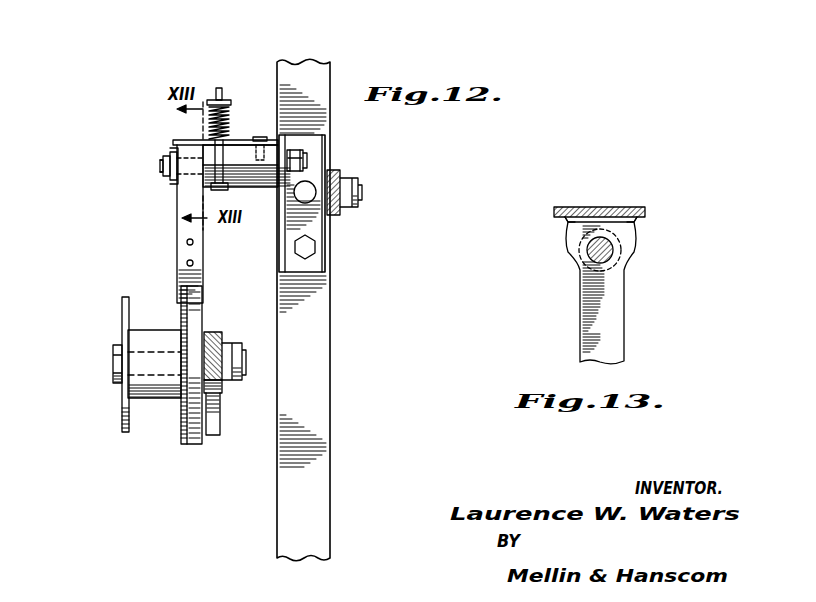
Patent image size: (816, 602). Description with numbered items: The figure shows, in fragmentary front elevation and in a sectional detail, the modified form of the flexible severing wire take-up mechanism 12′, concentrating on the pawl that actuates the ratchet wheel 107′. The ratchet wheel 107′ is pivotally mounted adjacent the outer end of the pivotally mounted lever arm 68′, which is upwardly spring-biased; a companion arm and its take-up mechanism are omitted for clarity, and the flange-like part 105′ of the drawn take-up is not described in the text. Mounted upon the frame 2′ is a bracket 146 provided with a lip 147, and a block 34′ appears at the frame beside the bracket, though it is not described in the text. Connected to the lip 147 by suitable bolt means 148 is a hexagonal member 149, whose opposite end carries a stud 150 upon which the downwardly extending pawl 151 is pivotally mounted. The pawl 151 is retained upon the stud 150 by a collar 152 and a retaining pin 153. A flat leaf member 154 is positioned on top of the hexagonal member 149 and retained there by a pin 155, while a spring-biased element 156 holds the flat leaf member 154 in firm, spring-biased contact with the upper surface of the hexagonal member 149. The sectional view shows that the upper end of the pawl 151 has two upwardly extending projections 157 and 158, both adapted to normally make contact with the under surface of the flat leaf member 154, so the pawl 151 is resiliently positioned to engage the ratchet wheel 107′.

In FIG. 12, the frame 2′ is at (310, 358).
In FIG. 12, the lip 147 is at (279, 242).
In FIG. 12, the bolt means 148 is at (305, 160).
In FIG. 12, the bracket 146 is at (318, 168).
In FIG. 12, the block 34′ is at (340, 213).
In FIG. 12, the hexagonal member 149 is at (258, 178).
In FIG. 12, the flat leaf member 154 is at (188, 140).
In FIG. 13, the flat leaf member 154 is at (612, 207).
In FIG. 12, the pawl 151 is at (177, 231).
In FIG. 13, the pawl 151 is at (622, 308).
In FIG. 12, the stud 150 is at (163, 160).
In FIG. 13, the stud 150 is at (588, 262).
In FIG. 12, the collar 152 is at (173, 150).
In FIG. 12, the retaining pin 153 is at (165, 170).
In FIG. 12, the spring-biased element 156 is at (221, 96).
In FIG. 12, the pin 155 is at (256, 137).
In FIG. 12, the ratchet wheel 107′ is at (200, 318).
In FIG. 12, the modified take-up mechanism 12′ is at (158, 326).
In FIG. 12, the flange 105′ is at (122, 324).
In FIG. 12, the lever arm 68′ is at (218, 414).
In FIG. 13, the upwardly extending projection 157 is at (567, 222).
In FIG. 13, the upwardly extending projection 158 is at (634, 222).